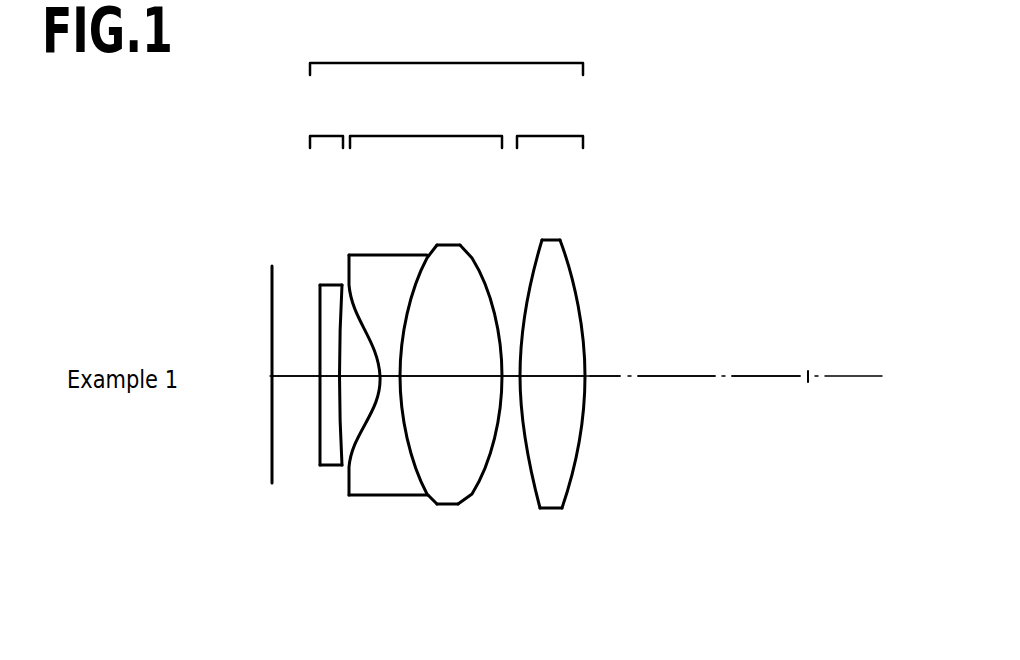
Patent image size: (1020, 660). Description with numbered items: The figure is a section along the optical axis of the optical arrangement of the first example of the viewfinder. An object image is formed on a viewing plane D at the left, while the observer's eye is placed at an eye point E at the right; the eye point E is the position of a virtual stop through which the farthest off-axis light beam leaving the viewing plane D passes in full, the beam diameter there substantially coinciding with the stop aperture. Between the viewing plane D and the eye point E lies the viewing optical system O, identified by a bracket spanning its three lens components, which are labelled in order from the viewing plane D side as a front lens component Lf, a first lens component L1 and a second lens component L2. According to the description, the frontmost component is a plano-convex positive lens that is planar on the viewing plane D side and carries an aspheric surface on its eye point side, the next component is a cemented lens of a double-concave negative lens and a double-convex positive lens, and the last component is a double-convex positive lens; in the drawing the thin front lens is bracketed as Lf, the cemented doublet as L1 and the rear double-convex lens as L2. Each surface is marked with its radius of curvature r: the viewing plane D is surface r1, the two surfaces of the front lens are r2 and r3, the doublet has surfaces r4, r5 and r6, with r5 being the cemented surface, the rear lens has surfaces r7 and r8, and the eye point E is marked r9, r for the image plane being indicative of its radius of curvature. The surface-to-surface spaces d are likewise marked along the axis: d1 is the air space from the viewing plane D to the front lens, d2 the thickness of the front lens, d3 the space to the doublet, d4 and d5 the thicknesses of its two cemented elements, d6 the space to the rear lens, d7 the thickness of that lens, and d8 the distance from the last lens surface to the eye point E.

The viewing plane D is at (245, 368).
The viewing optical system O is at (446, 270).
The front lens Lf is at (316, 286).
The first lens component L1 is at (425, 306).
The second lens component L2 is at (558, 308).
The eye point E is at (808, 365).
The radius of curvature of first surface r1 is at (272, 282).
The radius of curvature of second surface r2 is at (318, 300).
The radius of curvature of third surface r3 is at (341, 299).
The radius of curvature of fourth surface r4 is at (353, 300).
The radius of curvature of fifth surface r5 is at (421, 288).
The radius of curvature of sixth surface r6 is at (480, 280).
The radius of curvature of seventh surface r7 is at (532, 282).
The radius of curvature of eighth surface r8 is at (574, 281).
The radius of curvature of ninth surface r9 is at (808, 342).
The first surface-to-surface space d1 is at (296, 390).
The second surface-to-surface space d2 is at (328, 468).
The third surface-to-surface space d3 is at (359, 390).
The fourth surface-to-surface space d4 is at (390, 380).
The fifth surface-to-surface space d5 is at (451, 391).
The sixth surface-to-surface space d6 is at (502, 378).
The seventh surface-to-surface space d7 is at (552, 391).
The eighth surface-to-surface space d8 is at (692, 392).